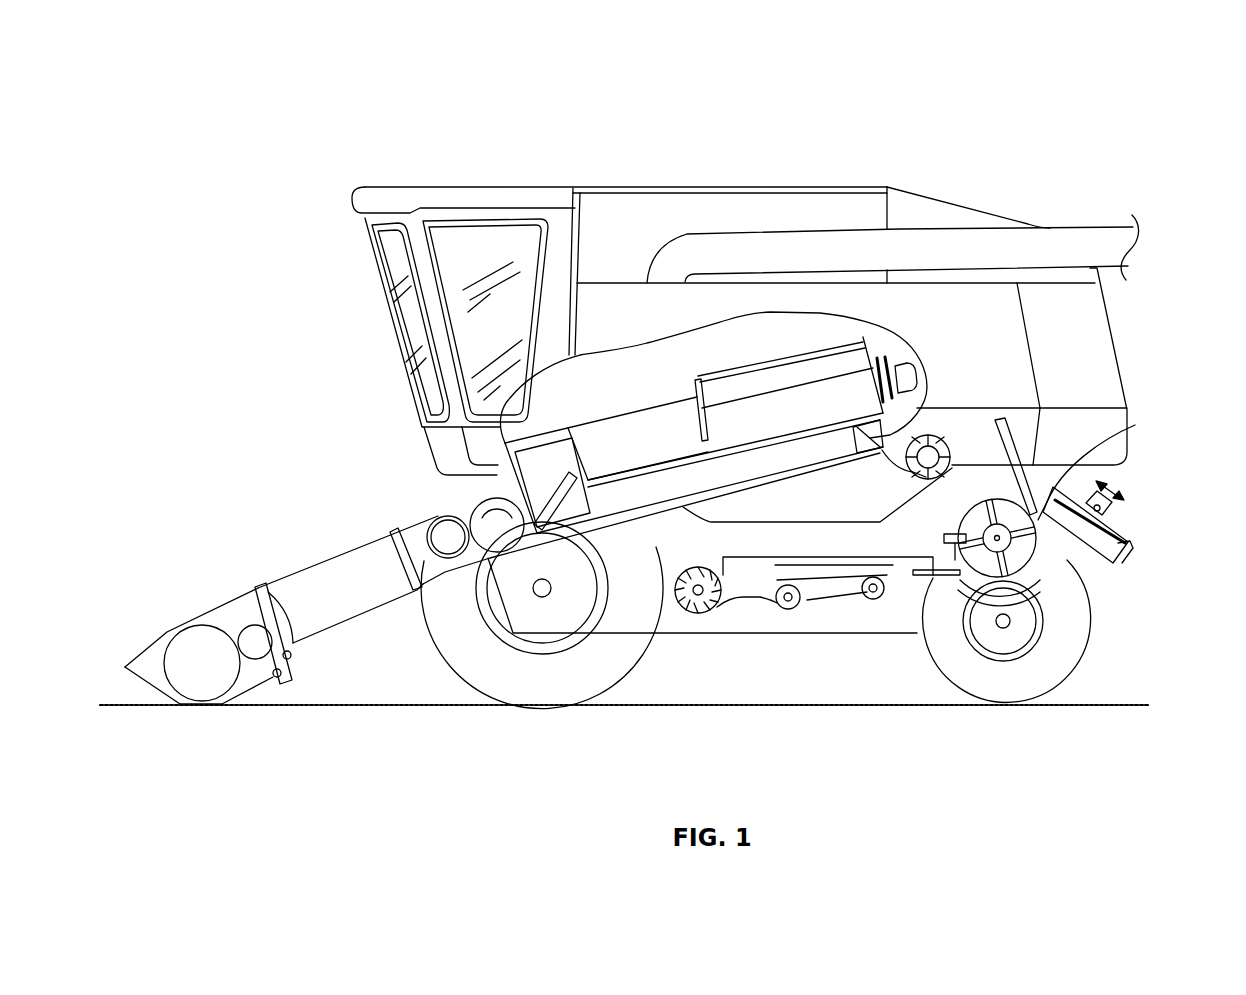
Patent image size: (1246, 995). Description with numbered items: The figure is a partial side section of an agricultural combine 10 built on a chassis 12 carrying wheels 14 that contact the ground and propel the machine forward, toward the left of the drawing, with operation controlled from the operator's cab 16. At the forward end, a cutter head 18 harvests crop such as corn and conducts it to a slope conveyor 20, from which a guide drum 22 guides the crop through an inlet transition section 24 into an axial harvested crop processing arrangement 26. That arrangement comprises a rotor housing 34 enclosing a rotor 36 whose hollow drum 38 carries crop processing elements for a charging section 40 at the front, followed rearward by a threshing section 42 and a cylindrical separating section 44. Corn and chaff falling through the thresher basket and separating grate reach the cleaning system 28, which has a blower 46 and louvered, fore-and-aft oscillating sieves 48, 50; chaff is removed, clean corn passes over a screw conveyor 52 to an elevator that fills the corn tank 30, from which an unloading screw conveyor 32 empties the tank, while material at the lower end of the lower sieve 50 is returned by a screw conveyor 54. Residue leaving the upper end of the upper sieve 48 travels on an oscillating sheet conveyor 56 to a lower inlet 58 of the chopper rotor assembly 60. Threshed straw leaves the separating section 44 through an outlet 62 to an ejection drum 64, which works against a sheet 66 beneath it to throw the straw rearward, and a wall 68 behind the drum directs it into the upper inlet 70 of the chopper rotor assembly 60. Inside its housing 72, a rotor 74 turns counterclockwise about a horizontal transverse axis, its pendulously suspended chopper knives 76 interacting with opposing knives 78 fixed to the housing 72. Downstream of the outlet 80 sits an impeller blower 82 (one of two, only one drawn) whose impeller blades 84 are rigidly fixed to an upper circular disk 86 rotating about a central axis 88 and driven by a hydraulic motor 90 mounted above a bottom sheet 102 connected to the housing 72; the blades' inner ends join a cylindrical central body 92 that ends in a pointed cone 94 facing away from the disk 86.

The agricultural combine 10 is at (953, 104).
The chassis 12 is at (732, 549).
The wheels 14 is at (618, 670).
The operator's cab 16 is at (462, 232).
The cutter head 18 is at (238, 610).
The slope conveyor 20 is at (315, 578).
The guide drum 22 is at (460, 509).
The inlet transition section 24 is at (545, 498).
The axial harvested crop processing arrangement 26 is at (790, 492).
The cleaning system 28 is at (825, 612).
The corn tank 30 is at (617, 240).
The unloading screw conveyor 32 is at (942, 262).
The rotor housing 34 is at (658, 505).
The rotor 36 is at (606, 503).
The hollow drum 38 is at (862, 362).
The charging section 40 is at (505, 432).
The threshing section 42 is at (570, 410).
The separating section 44 is at (700, 371).
The blower 46 is at (715, 605).
The upper sieve 48 is at (807, 565).
The lower sieve 50 is at (842, 580).
The screw conveyor 52 is at (777, 603).
The screw conveyor 54 is at (865, 598).
The oscillating sheet conveyor 56 is at (927, 580).
The lower inlet 58 is at (978, 577).
The chopper rotor assembly 60 is at (1058, 580).
The outlet 62 is at (905, 503).
The ejection drum 64 is at (928, 453).
The sheet 66 is at (905, 481).
The wall 68 is at (1008, 460).
The upper inlet 70 is at (999, 418).
The housing 72 is at (1057, 553).
The rotor 74 is at (997, 536).
The chopper knives 76 is at (975, 506).
The opposing knives 78 is at (944, 538).
The outlet 80 is at (1075, 547).
The impeller blower 82 is at (1165, 486).
The impeller blades 84 is at (1113, 553).
The upper circular disk 86 is at (1112, 485).
The central axis 88 is at (1107, 507).
The hydraulic motor 90 is at (1113, 520).
The cylindrical central body 92 is at (1070, 543).
The cone 94 is at (1087, 537).
The bottom sheet 102 is at (1130, 436).